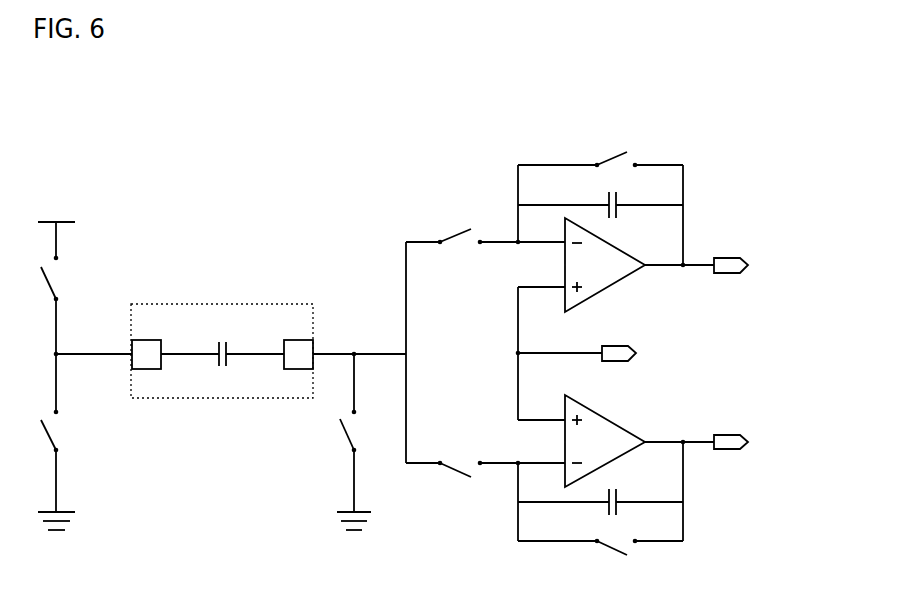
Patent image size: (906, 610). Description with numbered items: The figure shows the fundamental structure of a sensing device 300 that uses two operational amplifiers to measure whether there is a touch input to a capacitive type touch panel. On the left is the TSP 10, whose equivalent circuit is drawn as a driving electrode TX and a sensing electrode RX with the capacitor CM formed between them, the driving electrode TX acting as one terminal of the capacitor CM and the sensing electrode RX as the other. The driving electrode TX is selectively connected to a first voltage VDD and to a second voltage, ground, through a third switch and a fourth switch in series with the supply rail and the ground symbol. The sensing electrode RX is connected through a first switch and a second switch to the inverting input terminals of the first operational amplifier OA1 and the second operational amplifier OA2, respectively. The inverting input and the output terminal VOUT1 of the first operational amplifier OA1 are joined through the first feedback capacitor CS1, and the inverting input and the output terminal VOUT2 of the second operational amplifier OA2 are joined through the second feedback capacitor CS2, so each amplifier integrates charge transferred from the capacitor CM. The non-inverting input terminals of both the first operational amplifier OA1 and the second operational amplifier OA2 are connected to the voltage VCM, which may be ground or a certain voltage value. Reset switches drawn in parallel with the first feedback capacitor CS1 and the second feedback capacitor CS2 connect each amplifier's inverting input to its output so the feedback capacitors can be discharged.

The sensing device 300 is at (215, 131).
The TSP 10 is at (221, 303).
The driving electrode TX is at (162, 350).
The sensing electrode RX is at (280, 350).
The capacitor CM is at (220, 343).
The first operational amplifier OA1 is at (605, 441).
The second operational amplifier OA2 is at (605, 265).
The first feedback capacitor CS1 is at (628, 511).
The second feedback capacitor CS2 is at (628, 200).
The first voltage VDD is at (58, 229).
The voltage VCM is at (644, 354).
The output terminal of the first operational amplifier VOUT1 is at (768, 443).
The output terminal of the second operational amplifier VOUT2 is at (768, 266).